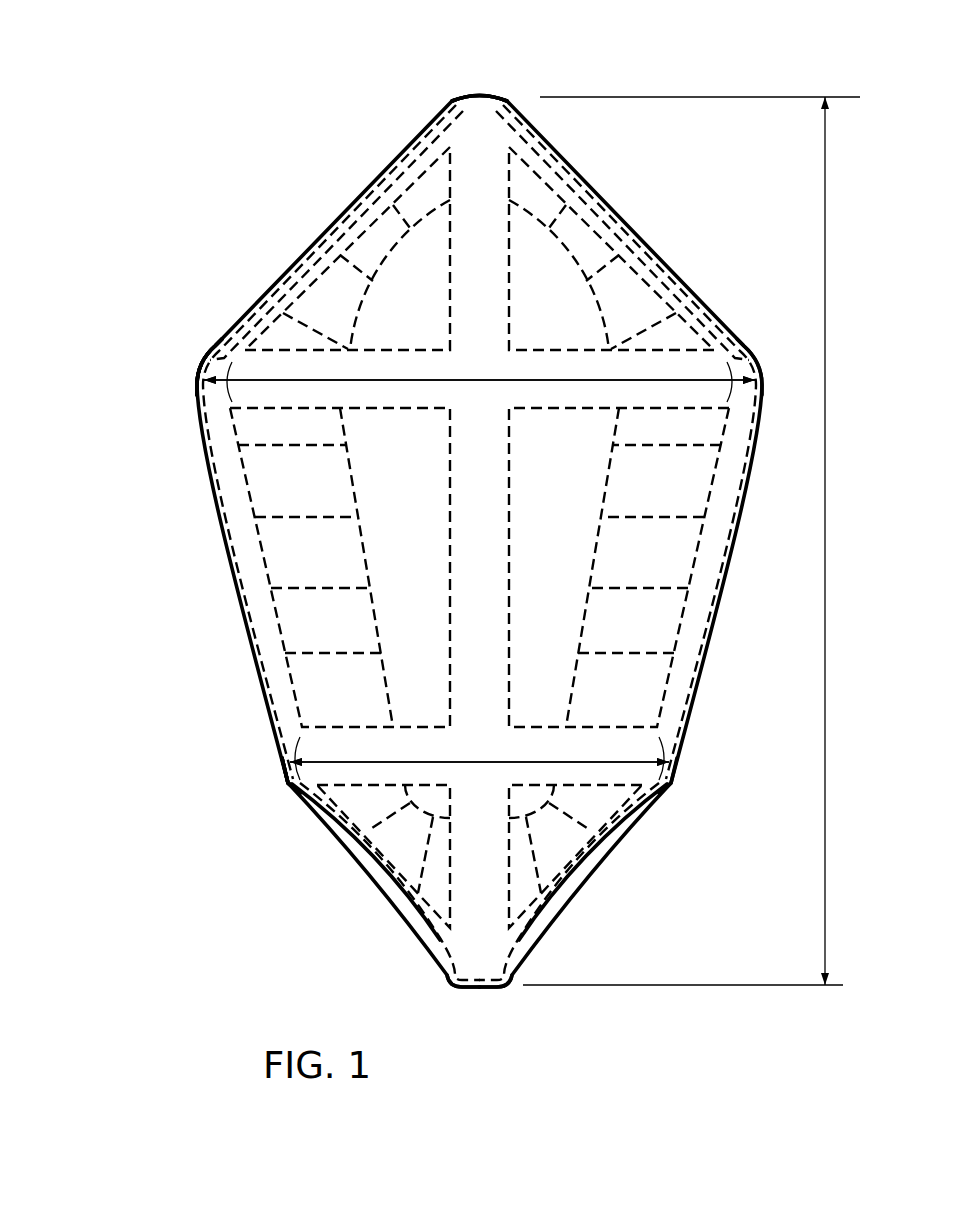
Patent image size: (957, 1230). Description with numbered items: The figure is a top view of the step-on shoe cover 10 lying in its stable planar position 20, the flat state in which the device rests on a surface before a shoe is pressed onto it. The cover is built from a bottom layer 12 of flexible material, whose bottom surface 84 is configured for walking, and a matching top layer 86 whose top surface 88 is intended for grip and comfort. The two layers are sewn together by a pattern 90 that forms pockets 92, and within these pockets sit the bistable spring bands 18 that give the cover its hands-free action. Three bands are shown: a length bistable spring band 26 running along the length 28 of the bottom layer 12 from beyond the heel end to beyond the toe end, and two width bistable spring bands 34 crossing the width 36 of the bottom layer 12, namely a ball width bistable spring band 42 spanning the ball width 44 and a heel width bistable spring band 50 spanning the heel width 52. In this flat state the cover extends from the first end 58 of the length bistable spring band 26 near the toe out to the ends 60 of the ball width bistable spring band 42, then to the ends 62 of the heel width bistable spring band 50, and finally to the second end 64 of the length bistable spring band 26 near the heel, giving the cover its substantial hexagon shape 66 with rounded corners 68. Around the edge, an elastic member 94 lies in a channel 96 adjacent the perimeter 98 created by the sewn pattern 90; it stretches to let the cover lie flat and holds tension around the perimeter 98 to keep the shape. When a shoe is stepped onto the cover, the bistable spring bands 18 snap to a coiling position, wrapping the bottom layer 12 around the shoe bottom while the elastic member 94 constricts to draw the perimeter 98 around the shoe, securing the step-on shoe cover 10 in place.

The step-on shoe cover 10 is at (198, 85).
The bottom layer 12 is at (320, 813).
The bistable spring band 18 is at (484, 84).
The stable planar position 20 is at (187, 225).
The length bistable spring band 26 is at (484, 84).
The length 28 is at (826, 247).
The width bistable spring band 34 is at (188, 385).
The width 36 is at (458, 380).
The ball width bistable spring band 42 is at (188, 385).
The ball width 44 is at (458, 380).
The heel width bistable spring band 50 is at (255, 752).
The heel width 52 is at (490, 761).
The first end 58 is at (460, 96).
The ends 60 is at (195, 395).
The ends 62 is at (283, 770).
The second end 64 is at (457, 987).
The substantial hexagon shape 66 is at (273, 217).
The rounded corners 68 is at (514, 92).
The bottom surface 84 is at (232, 602).
The top layer 86 is at (270, 475).
The top surface 88 is at (421, 484).
The pattern 90 is at (348, 590).
The pockets 92 is at (463, 261).
The elastic member 94 is at (337, 147).
The channel 96 is at (342, 208).
The perimeter 98 is at (407, 145).